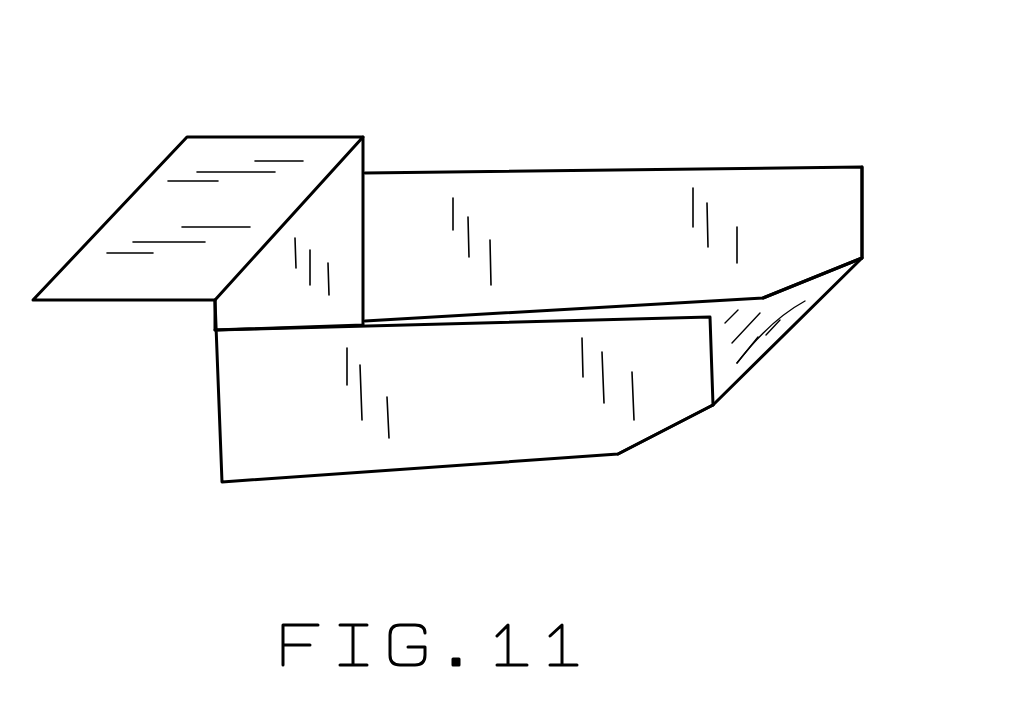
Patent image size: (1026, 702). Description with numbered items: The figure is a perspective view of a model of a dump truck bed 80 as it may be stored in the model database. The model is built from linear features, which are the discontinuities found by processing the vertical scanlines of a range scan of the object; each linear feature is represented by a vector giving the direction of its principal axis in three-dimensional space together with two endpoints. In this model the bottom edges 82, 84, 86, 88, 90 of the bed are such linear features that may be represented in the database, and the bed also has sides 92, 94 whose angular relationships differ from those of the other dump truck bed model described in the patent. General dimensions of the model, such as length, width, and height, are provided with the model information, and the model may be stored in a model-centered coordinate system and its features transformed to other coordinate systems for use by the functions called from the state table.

The dump truck bed 80 is at (590, 100).
The bottom edge 82 is at (447, 467).
The bottom edge 84 is at (673, 432).
The bottom edge 86 is at (775, 347).
The bottom edge 88 is at (812, 272).
The bottom edge 90 is at (675, 300).
The side 92 is at (780, 313).
The side 94 is at (253, 162).